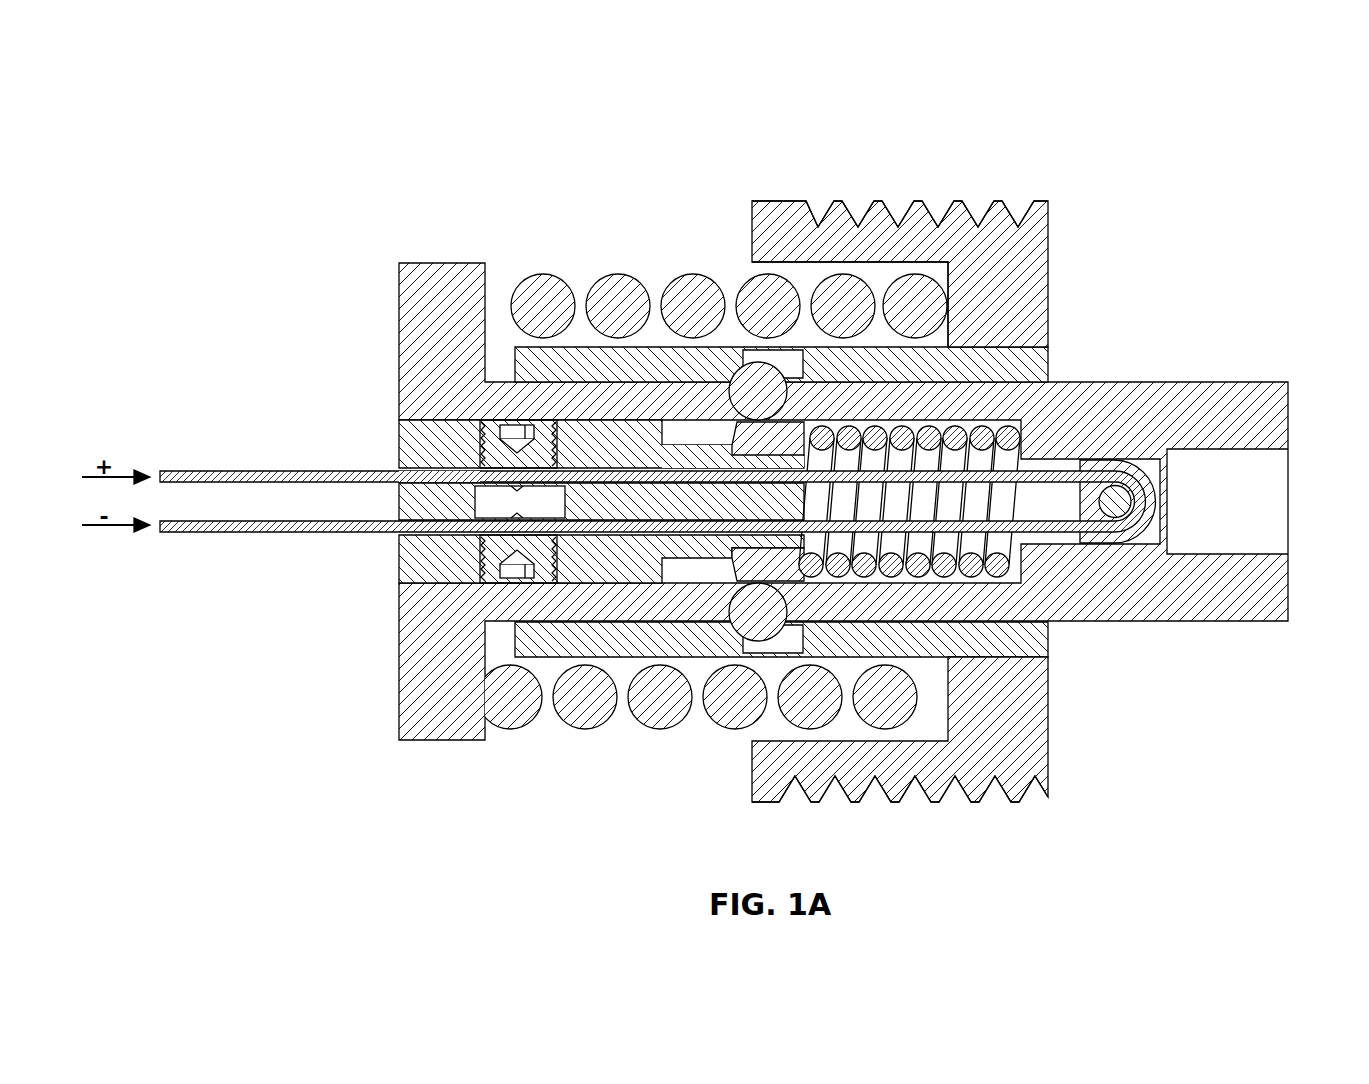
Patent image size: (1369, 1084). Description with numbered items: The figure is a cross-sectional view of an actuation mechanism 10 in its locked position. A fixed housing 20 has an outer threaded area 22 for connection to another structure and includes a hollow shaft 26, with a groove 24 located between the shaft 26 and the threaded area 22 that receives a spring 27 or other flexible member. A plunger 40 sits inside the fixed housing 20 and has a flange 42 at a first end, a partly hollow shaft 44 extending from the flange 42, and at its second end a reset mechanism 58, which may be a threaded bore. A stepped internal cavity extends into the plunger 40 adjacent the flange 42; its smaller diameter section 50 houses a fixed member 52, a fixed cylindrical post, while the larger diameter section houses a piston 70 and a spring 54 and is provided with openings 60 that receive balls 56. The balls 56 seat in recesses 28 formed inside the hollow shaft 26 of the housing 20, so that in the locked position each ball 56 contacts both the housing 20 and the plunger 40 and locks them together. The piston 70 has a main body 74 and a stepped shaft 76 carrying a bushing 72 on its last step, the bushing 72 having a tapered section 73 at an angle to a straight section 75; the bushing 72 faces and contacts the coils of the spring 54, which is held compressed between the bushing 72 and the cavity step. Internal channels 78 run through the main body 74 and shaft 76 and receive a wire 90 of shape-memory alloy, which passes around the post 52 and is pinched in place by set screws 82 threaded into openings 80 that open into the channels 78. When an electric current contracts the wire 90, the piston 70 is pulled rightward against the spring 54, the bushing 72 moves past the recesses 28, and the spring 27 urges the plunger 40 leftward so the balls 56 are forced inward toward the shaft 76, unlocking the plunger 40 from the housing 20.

The actuation mechanism 10 is at (1097, 123).
The fixed housing 20 is at (1020, 312).
The outer threaded area 22 is at (950, 212).
The groove 24 is at (838, 265).
The hollow shaft 26 is at (667, 367).
The spring 27 is at (538, 300).
The recess 28 is at (767, 278).
The plunger 40 is at (1210, 392).
The flange 42 is at (436, 297).
The partly hollow shaft 44 is at (1017, 600).
The smaller diameter section 50 is at (1055, 540).
The fixed member 52 is at (1115, 495).
The spring 54 is at (1025, 400).
The ball 56 is at (763, 377).
The reset mechanism 58 is at (1252, 553).
The opening 60 is at (775, 590).
The piston 70 is at (397, 555).
The bushing 72 is at (793, 440).
The tapered section 73 is at (678, 729).
The main body 74 is at (432, 440).
The straight section 75 is at (745, 577).
The stepped shaft 76 is at (671, 440).
The internal channel 78 is at (420, 472).
The opening 80 is at (500, 578).
The set screw 82 is at (541, 562).
The wire 90 is at (247, 480).